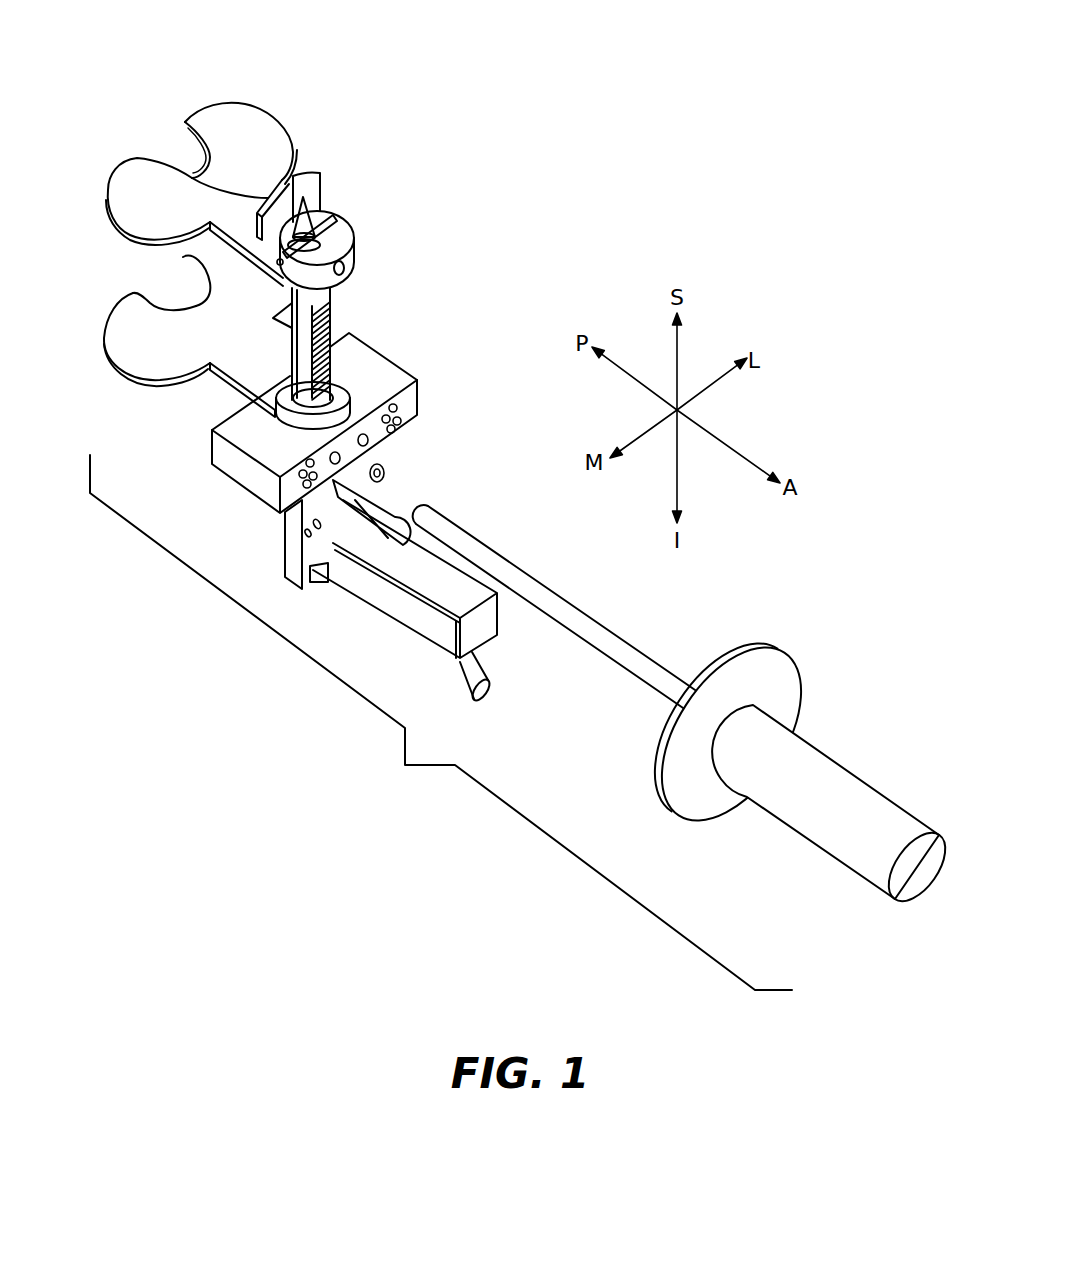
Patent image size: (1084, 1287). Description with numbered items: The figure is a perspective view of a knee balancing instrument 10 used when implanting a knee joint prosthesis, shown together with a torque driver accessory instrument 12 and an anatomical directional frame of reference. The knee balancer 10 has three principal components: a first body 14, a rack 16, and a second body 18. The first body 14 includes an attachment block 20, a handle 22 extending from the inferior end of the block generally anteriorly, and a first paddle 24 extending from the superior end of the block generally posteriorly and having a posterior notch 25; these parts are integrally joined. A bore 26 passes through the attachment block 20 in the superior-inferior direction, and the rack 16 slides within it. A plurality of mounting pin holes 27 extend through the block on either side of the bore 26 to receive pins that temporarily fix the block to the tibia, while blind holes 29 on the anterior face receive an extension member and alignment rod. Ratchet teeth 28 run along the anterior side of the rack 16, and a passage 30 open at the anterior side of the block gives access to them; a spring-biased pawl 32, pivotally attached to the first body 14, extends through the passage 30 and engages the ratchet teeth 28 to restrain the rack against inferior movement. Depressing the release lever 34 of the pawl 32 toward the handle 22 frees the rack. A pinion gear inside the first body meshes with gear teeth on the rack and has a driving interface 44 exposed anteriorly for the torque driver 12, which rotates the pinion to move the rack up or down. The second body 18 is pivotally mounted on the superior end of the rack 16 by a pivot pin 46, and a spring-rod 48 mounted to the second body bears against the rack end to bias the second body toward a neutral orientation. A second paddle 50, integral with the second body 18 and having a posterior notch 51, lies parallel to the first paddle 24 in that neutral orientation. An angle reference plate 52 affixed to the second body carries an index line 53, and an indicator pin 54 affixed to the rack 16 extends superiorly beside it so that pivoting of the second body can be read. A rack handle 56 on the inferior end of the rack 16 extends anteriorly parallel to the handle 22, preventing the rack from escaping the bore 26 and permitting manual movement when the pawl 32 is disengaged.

The knee balancing instrument 10 is at (471, 275).
The torque driver accessory instrument 12 is at (832, 618).
The first body 14 is at (325, 417).
The rack 16 is at (333, 318).
The second body 18 is at (353, 236).
The attachment block 20 is at (360, 352).
The handle 22 is at (426, 601).
The first paddle 24 is at (188, 339).
The posterior notch 25 is at (127, 294).
The bore 26 is at (287, 390).
The mounting pin holes 27 is at (410, 404).
The ratchet teeth 28 is at (314, 390).
The blind holes 29 is at (367, 440).
The passage 30 is at (350, 480).
The pawl 32 is at (333, 481).
The release lever 34 is at (403, 512).
The driving interface 44 is at (390, 470).
The pivot pin 46 is at (345, 270).
The spring-rod 48 is at (325, 220).
The second paddle 50 is at (198, 185).
The posterior notch 51 is at (185, 122).
The angle reference plate 52 is at (307, 176).
The index line 53 is at (290, 208).
The indicator pin 54 is at (317, 205).
The rack handle 56 is at (472, 673).